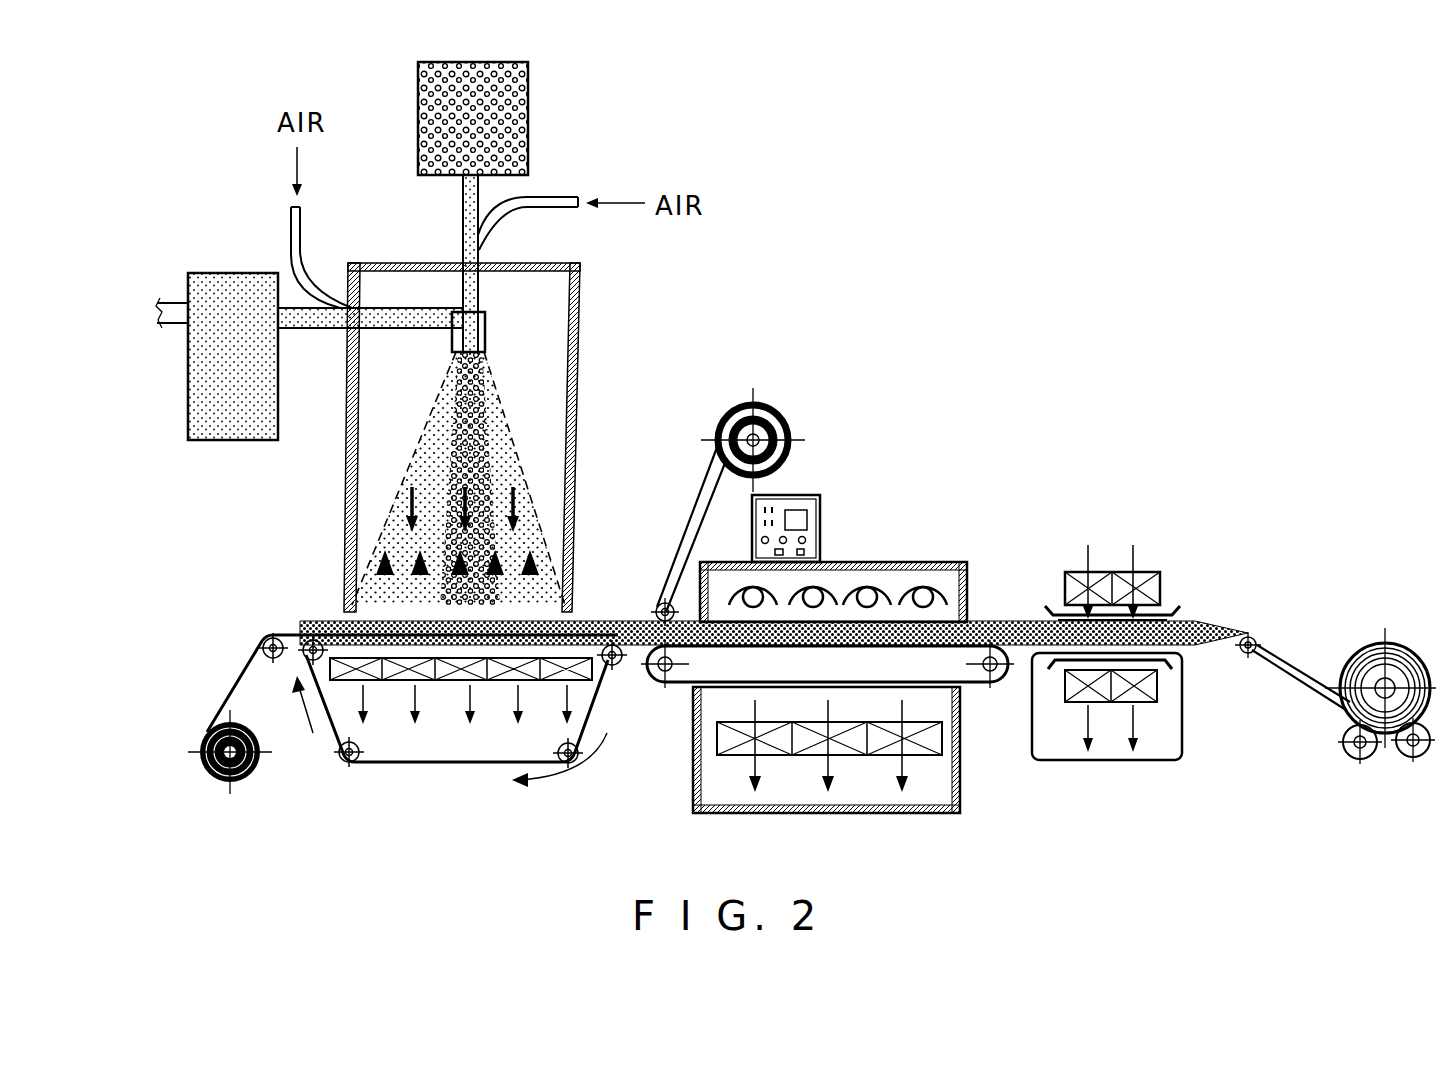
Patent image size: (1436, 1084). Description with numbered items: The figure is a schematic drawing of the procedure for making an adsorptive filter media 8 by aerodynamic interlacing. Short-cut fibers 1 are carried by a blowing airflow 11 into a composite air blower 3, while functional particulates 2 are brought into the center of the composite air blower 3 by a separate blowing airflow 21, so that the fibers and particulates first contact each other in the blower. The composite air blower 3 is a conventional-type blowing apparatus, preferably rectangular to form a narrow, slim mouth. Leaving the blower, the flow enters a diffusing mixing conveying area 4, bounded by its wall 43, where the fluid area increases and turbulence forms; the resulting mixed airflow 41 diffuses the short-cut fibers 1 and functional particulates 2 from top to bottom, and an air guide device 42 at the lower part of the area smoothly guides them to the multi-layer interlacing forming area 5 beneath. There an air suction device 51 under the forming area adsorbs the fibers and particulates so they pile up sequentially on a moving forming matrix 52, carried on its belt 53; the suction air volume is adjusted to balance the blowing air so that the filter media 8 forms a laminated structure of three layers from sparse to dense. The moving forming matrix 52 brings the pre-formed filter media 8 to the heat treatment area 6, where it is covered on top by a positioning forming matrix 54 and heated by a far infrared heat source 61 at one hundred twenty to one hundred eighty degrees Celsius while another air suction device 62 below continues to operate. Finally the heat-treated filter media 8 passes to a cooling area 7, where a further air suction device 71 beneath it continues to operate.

The short-cut fibers 1 is at (225, 310).
The blowing airflow 11 is at (298, 238).
The functional particulates 2 is at (503, 113).
The blowing airflow 21 is at (558, 192).
The composite air blower 3 is at (487, 328).
The diffusing mixing conveying area 4 is at (540, 437).
The mixed airflow 41 is at (510, 497).
The air guide device 42 is at (537, 553).
The chamber wall 43 is at (577, 390).
The multi-layer interlacing forming area 5 is at (442, 683).
The air suction device 51 is at (460, 673).
The moving forming matrix 52 is at (412, 635).
The belt 53 is at (618, 660).
The positioning forming matrix 54 is at (700, 503).
The heat treatment area 6 is at (878, 537).
The heat source 61 is at (923, 597).
The air suction device 62 is at (847, 753).
The cooling area 7 is at (1172, 548).
The air suction device 71 is at (1157, 688).
The filter media 8 is at (618, 620).